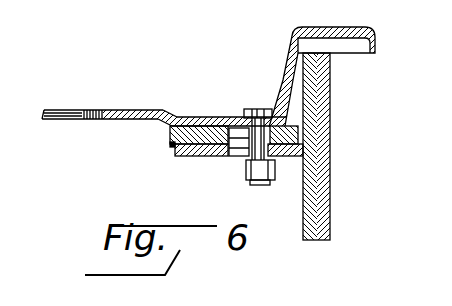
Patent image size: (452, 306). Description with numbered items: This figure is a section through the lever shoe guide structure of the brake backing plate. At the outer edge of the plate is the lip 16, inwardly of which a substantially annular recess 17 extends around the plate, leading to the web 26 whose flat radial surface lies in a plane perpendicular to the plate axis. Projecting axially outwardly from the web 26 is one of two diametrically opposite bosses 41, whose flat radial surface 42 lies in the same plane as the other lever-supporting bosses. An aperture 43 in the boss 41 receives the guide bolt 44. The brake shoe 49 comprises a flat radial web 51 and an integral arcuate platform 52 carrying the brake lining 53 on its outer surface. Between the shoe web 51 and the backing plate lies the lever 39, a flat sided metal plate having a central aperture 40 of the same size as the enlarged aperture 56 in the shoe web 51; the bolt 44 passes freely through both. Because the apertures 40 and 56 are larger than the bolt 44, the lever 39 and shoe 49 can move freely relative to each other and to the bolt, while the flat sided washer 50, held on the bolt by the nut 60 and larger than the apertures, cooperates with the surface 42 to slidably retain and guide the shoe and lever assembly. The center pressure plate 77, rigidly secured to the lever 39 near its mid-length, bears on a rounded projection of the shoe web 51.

The lip 16 is at (376, 48).
The annular recess 17 is at (356, 27).
The web 26 is at (114, 122).
The lever 39 is at (171, 133).
The central aperture 40 is at (244, 118).
The boss 41 is at (181, 116).
The flat radial surface 42 is at (194, 128).
The aperture 43 is at (252, 110).
The guide bolt 44 is at (258, 184).
The brake shoe 49 is at (334, 156).
The washer 50 is at (292, 157).
The web 51 is at (186, 157).
The arcuate platform 52 is at (304, 208).
The brake lining 53 is at (332, 105).
The enlarged aperture 56 is at (225, 156).
The nut 60 is at (250, 183).
The center pressure plate 77 is at (171, 145).